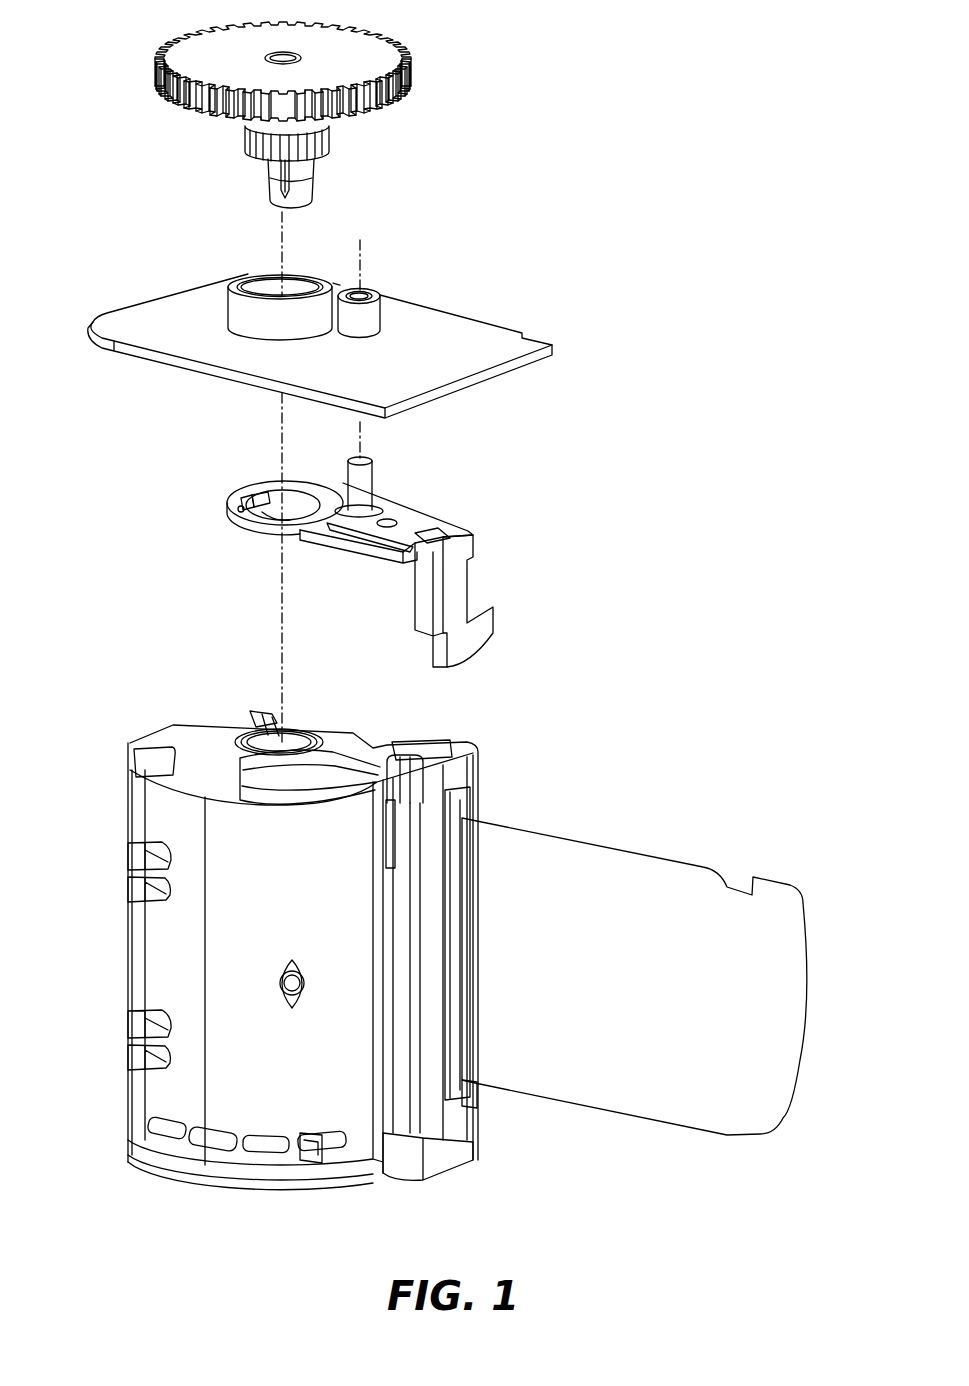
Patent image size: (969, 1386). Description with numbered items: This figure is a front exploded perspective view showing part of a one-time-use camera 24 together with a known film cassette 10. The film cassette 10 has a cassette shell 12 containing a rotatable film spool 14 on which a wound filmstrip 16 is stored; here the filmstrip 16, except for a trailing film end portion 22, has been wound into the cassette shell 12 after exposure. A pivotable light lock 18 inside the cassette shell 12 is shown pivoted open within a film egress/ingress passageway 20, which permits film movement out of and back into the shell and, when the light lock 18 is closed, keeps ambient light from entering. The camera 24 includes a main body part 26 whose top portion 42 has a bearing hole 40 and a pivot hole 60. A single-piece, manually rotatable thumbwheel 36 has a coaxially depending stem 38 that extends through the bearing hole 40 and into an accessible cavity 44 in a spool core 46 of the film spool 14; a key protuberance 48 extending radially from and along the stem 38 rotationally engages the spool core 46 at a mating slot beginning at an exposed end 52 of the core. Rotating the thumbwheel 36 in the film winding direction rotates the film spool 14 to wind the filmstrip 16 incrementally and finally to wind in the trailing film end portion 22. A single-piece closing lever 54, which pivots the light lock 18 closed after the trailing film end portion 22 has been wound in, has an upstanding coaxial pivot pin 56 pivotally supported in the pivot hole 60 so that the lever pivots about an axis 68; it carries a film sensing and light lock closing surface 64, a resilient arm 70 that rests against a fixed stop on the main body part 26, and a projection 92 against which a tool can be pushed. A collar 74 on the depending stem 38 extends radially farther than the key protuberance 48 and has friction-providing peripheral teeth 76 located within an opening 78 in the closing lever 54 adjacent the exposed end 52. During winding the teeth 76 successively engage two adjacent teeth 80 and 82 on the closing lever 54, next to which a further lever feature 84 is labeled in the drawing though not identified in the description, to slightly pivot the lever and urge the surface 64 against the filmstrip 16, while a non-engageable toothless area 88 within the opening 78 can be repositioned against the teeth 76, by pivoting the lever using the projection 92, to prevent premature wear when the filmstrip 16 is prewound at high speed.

The film cassette 10 is at (103, 907).
The cassette shell 12 is at (303, 911).
The film spool 14 is at (250, 742).
The filmstrip 16 is at (634, 966).
The light lock 18 is at (472, 1108).
The film egress/ingress passageway 20 is at (470, 812).
The trailing film end portion 22 is at (607, 998).
The one-time-use camera 24 is at (627, 227).
The main body part 26 is at (348, 346).
The thumbwheel 36 is at (188, 27).
The depending stem 38 is at (278, 183).
The bearing hole 40 is at (252, 290).
The top portion 42 is at (415, 368).
The accessible cavity 44 is at (258, 722).
The spool core 46 is at (275, 725).
The key protuberance 48 is at (296, 184).
The exposed end 52 is at (297, 740).
The closing lever 54 is at (430, 521).
The pivot pin 56 is at (372, 482).
The pivot hole 60 is at (368, 292).
The film sensing and light lock closing surface 64 is at (493, 625).
The axis 68 is at (366, 256).
The resilient arm 70 is at (361, 547).
The collar 74 is at (282, 141).
The peripheral teeth 76 is at (330, 140).
The opening 78 is at (295, 507).
The tooth 80 is at (246, 497).
The tooth 82 is at (238, 510).
The tab 84 is at (265, 491).
The toothless area 88 is at (275, 522).
The projection 92 is at (475, 540).